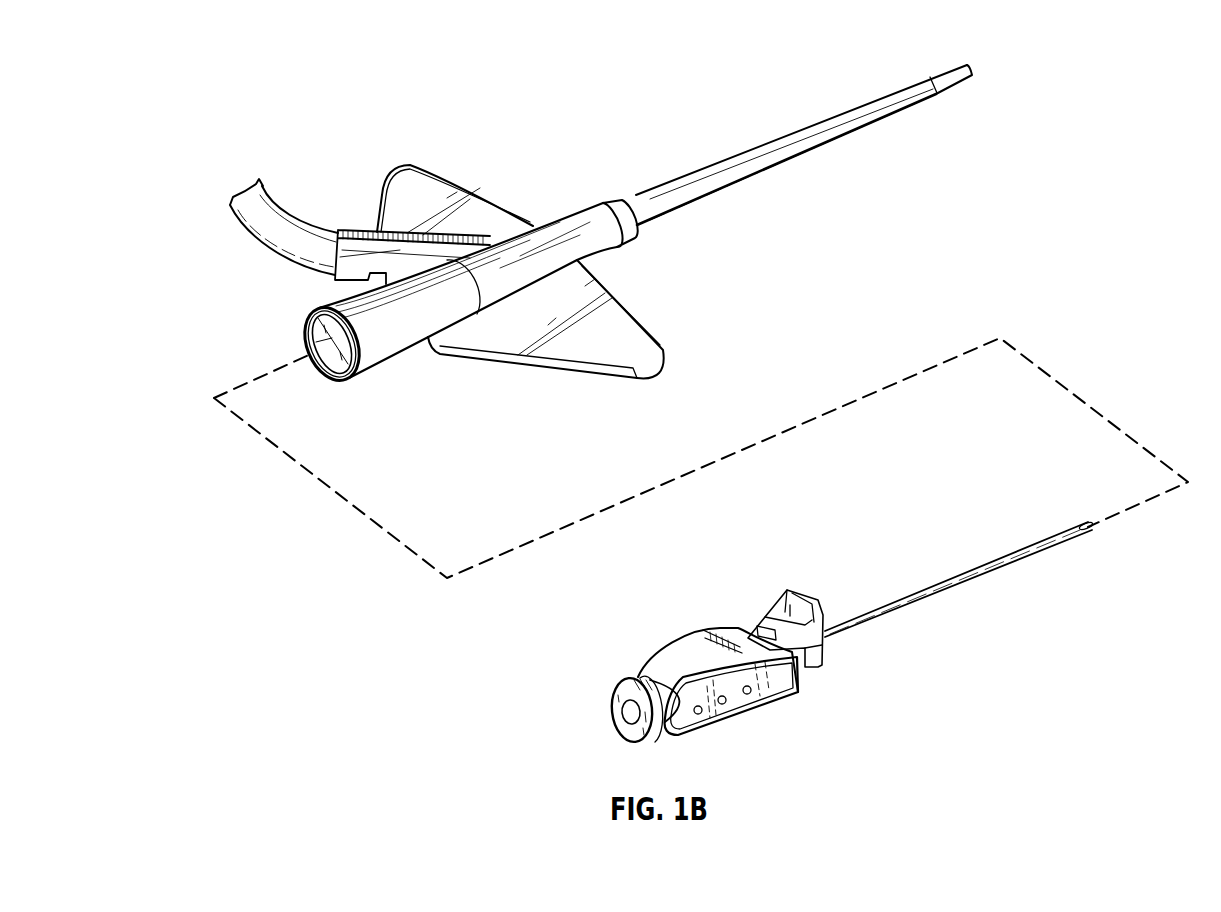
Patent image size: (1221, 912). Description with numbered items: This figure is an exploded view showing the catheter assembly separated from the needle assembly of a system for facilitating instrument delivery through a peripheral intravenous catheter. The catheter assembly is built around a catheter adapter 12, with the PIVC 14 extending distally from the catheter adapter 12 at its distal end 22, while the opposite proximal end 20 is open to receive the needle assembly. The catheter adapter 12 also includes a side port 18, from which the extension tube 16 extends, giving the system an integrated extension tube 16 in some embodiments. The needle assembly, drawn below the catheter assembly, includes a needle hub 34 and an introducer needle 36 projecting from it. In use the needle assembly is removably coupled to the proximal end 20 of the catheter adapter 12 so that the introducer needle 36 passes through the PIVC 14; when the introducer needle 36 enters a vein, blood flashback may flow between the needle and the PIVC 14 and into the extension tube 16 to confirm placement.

The catheter adapter 12 is at (525, 253).
The PIVC 14 is at (890, 103).
The extension tube 16 is at (265, 207).
The side port 18 is at (358, 242).
The proximal end 20 is at (377, 360).
The distal end 22 is at (618, 203).
The needle hub 34 is at (695, 650).
The introducer needle 36 is at (992, 577).